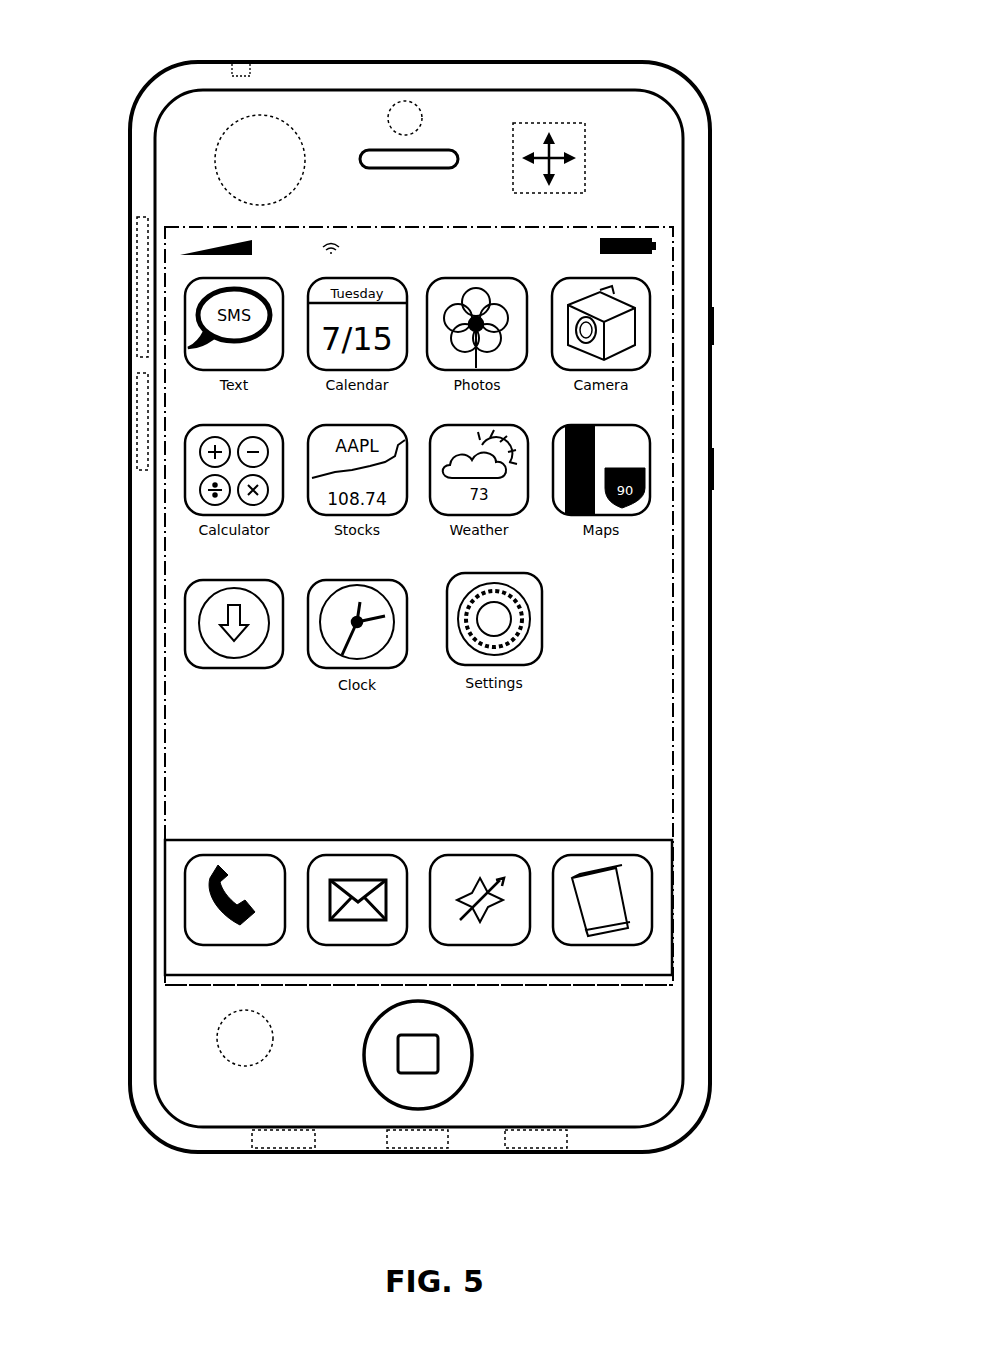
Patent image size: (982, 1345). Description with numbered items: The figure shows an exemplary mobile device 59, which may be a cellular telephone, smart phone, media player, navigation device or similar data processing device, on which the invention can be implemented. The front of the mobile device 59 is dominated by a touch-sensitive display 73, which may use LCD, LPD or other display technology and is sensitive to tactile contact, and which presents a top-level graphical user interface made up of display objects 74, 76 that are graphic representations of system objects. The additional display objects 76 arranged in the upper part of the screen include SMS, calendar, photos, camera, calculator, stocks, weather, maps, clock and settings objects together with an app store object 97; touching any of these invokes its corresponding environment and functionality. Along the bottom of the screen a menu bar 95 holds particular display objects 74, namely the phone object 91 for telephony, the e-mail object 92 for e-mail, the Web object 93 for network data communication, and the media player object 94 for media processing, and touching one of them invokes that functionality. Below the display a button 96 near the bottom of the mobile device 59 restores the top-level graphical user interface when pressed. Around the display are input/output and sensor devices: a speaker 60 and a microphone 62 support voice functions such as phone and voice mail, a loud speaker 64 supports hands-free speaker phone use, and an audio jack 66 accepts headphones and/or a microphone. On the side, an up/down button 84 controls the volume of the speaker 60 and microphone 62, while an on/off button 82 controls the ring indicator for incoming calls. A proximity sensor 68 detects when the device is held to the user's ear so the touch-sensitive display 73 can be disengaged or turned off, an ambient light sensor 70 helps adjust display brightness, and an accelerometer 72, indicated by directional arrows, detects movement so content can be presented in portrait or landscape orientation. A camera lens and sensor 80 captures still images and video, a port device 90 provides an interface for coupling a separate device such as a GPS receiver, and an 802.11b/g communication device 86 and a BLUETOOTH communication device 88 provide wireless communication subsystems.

The mobile device 59 is at (505, 60).
The audio jack 66 is at (242, 66).
The proximity sensor 68 is at (238, 185).
The camera lens and sensor 80 is at (423, 118).
The speaker 60 is at (415, 170).
The accelerometer 72 is at (590, 150).
The touch-sensitive display 73 is at (612, 228).
The display objects 76 is at (612, 717).
The 802.11b/g communication device 86 is at (140, 268).
The BLUETOOTH communication device 88 is at (140, 420).
The on/off button 82 is at (712, 326).
The up/down button 84 is at (712, 468).
The app store object 97 is at (235, 578).
The display objects 74 is at (655, 856).
The menu bar 95 is at (560, 978).
The phone object 91 is at (238, 855).
The e-mail object 92 is at (358, 855).
The Web object 93 is at (480, 855).
The media player object 94 is at (600, 855).
The button 96 is at (474, 1053).
The ambient light sensor 70 is at (250, 1064).
The microphone 62 is at (285, 1152).
The port device 90 is at (418, 1152).
The loud speaker 64 is at (535, 1152).